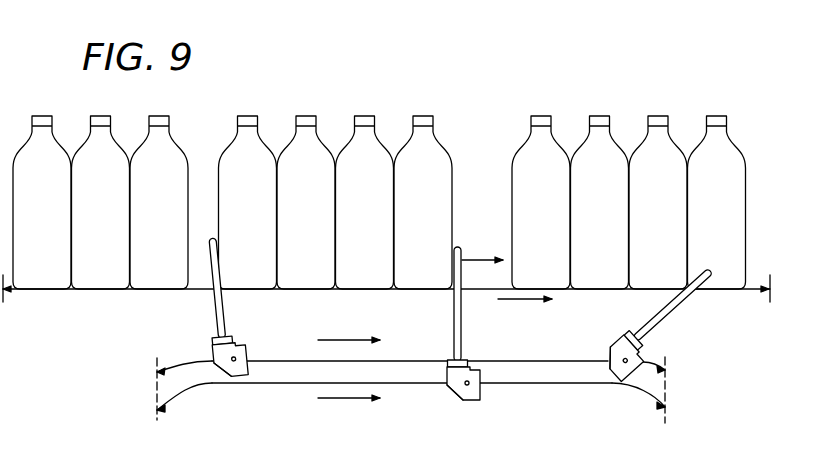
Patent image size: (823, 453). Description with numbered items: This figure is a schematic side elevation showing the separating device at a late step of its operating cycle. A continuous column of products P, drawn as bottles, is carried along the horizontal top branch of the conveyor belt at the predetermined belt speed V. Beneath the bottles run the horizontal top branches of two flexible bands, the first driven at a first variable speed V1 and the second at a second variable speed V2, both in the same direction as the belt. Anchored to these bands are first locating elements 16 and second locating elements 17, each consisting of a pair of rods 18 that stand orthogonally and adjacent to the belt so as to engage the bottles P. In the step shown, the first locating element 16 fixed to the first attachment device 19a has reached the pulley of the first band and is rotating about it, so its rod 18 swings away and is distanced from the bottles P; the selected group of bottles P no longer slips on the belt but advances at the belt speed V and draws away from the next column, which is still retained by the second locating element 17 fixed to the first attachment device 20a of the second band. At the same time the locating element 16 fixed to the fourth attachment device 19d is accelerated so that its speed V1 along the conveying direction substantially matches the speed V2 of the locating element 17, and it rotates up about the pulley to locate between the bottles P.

The first locating element 16 is at (200, 353).
The second locating element 17 is at (487, 394).
The rod 18 is at (217, 312).
The first attachment device 19a is at (614, 368).
The fourth attachment device 19d is at (228, 370).
The first attachment device 20a is at (457, 388).
The products P is at (420, 163).
The speed V is at (528, 298).
The first variable speed V1 is at (349, 330).
The second variable speed V2 is at (472, 258).